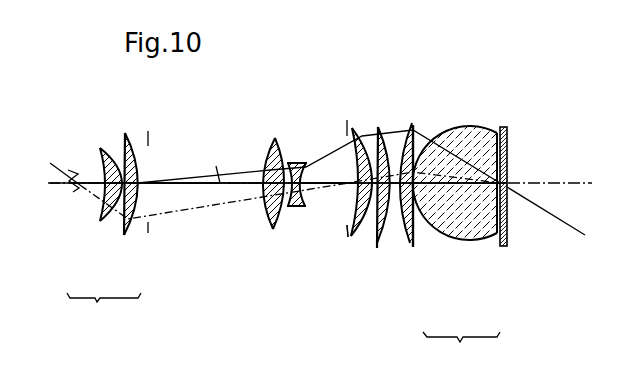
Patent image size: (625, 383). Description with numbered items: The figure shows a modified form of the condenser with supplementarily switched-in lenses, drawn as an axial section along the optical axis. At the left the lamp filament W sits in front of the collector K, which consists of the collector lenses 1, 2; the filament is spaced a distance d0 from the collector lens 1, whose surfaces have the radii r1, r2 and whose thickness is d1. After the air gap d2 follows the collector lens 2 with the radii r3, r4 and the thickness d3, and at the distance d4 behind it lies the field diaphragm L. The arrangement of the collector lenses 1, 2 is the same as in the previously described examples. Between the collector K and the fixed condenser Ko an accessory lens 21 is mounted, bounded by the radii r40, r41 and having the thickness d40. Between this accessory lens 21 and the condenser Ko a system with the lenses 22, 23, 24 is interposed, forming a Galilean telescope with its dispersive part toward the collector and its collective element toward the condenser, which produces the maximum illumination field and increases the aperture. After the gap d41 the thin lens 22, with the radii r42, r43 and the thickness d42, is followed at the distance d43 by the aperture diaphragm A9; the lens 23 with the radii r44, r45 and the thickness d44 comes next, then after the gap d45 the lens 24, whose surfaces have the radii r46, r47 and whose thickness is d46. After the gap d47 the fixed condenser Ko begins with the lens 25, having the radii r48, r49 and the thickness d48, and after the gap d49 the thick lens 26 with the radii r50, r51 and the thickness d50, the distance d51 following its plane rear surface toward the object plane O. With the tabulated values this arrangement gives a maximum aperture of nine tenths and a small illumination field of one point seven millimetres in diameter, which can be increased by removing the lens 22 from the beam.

The collector lens 1 is at (82, 185).
The collector lens 2 is at (151, 181).
The collector K is at (104, 310).
The lamp filament W is at (62, 188).
The field diaphragm L is at (148, 229).
The radius of first surface of lens 1 r1 is at (100, 149).
The radius of second surface of lens 1 r2 is at (103, 148).
The radius of first surface of lens 2 r3 is at (123, 150).
The radius of second surface of lens 2 r4 is at (152, 151).
The axial distance from filament to lens 1 d0 is at (94, 187).
The axial thickness of lens 1 d1 is at (100, 207).
The axial distance between lenses 1 and 2 d2 is at (115, 208).
The axial thickness of lens 2 d3 is at (133, 213).
The axial distance from lens 2 to field diaphragm d4 is at (143, 181).
The accessory lens 21 is at (262, 170).
The lens 22 is at (310, 164).
The lens 23 is at (337, 183).
The lens 24 is at (391, 176).
The condenser lens 25 is at (430, 194).
The condenser lens 26 is at (460, 191).
The fixed condenser Ko is at (461, 352).
The aperture diaphragm A9 is at (347, 236).
The image plane O is at (507, 218).
The radius of first surface of lens 21 r40 is at (268, 160).
The radius of second surface of lens 21 r41 is at (280, 147).
The radius of first surface of lens 22 r42 is at (288, 163).
The radius of second surface of lens 22 r43 is at (315, 156).
The radius of first surface of lens 23 r44 is at (349, 180).
The radius of second surface of lens 23 r45 is at (353, 144).
The radius of first surface of lens 24 r46 is at (377, 128).
The radius of second surface of lens 24 r47 is at (402, 126).
The radius of first surface of lens 25 r48 is at (410, 126).
The radius of second surface of lens 25 r49 is at (437, 155).
The radius of first surface of lens 26 r50 is at (460, 140).
The radius of second surface of lens 26 r51 is at (507, 133).
The axial thickness of lens 21 d40 is at (268, 195).
The axial distance between lenses 21 and 22 d41 is at (280, 190).
The axial thickness of lens 22 d42 is at (295, 197).
The axial distance between lens 22 and aperture diaphragm d43 is at (331, 188).
The axial thickness of lens 23 d44 is at (363, 238).
The axial distance between lenses 23 and 24 d45 is at (378, 257).
The axial thickness of lens 24 d46 is at (390, 243).
The axial distance between lenses 24 and 25 d47 is at (411, 246).
The axial thickness of lens 25 d48 is at (414, 250).
The axial distance between lenses 25 and 26 d49 is at (422, 212).
The axial thickness of lens 26 d50 is at (493, 237).
The axial distance behind lens 26 d51 is at (508, 178).